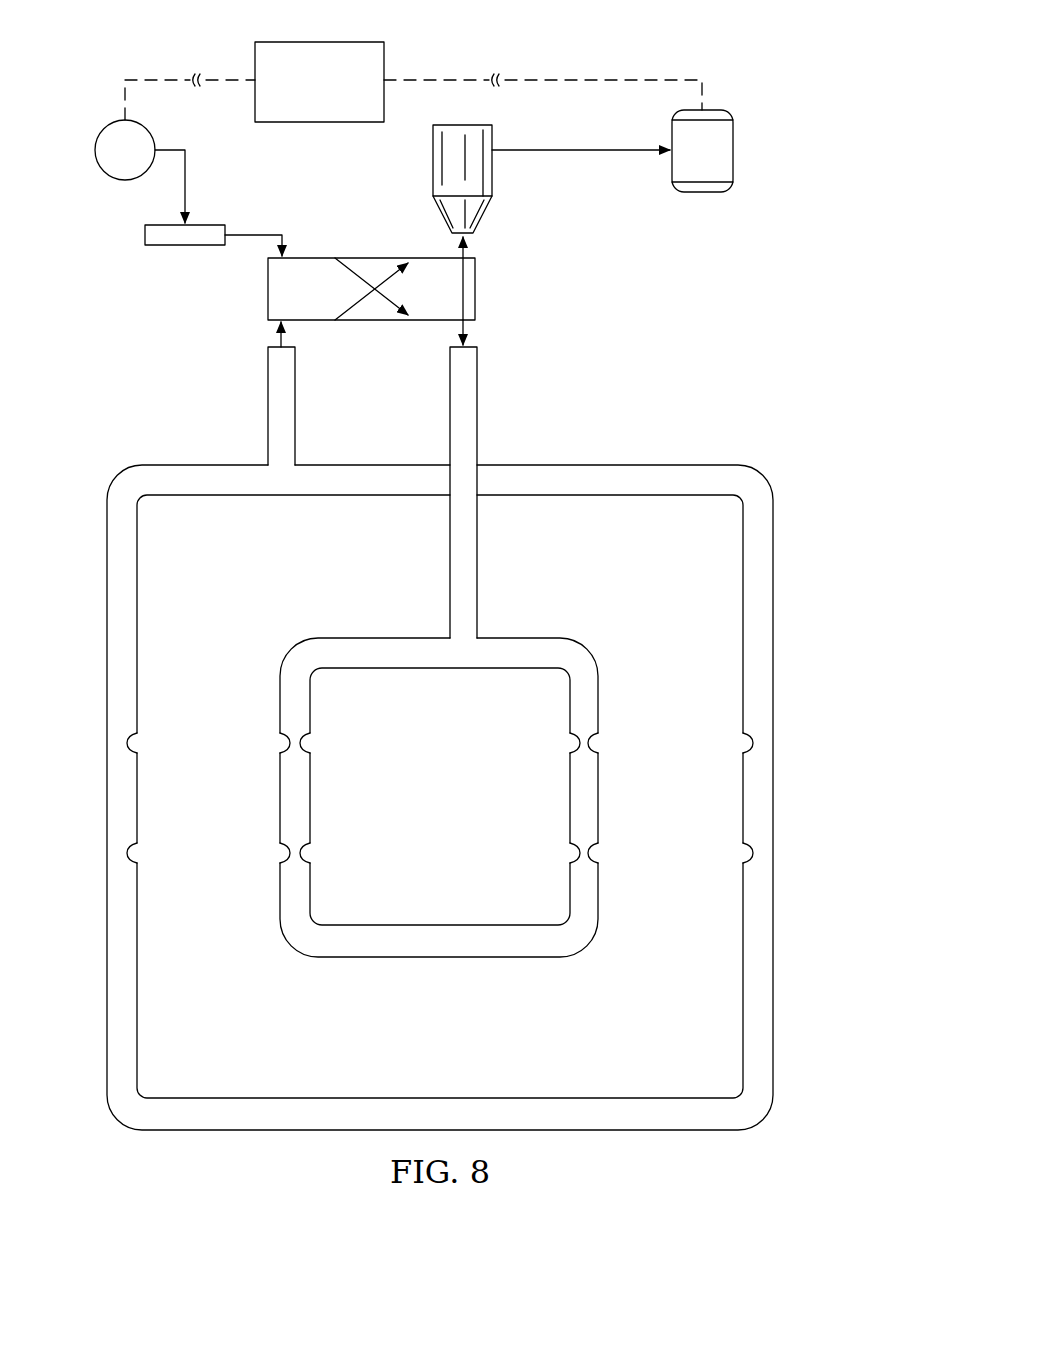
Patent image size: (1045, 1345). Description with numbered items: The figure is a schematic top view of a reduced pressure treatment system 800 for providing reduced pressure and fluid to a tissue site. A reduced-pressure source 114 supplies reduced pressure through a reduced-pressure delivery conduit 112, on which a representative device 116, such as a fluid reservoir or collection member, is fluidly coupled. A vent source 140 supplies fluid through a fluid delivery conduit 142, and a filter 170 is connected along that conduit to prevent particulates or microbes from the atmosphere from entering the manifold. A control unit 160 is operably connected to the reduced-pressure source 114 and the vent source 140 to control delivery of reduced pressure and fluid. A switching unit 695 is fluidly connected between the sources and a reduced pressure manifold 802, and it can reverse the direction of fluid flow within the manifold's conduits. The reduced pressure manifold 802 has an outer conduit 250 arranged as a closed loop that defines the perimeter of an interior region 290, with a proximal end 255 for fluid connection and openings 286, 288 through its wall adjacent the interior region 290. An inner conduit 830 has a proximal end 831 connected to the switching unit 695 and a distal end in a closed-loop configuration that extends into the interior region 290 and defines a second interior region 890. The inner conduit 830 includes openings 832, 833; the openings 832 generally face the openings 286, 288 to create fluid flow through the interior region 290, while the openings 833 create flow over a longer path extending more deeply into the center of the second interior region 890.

The reduced pressure treatment system 800 is at (759, 58).
The control unit 160 is at (303, 95).
The vent source 140 is at (108, 128).
The fluid delivery conduit 142 is at (182, 193).
The filter 170 is at (185, 246).
The switching unit 695 is at (312, 258).
The representative device 116 is at (432, 160).
The reduced-pressure delivery conduit 112 is at (575, 150).
The reduced-pressure source 114 is at (735, 139).
The proximal end 255 is at (266, 398).
The proximal end 831 is at (478, 400).
The outer conduit 250 is at (672, 463).
The reduced pressure manifold 802 is at (758, 437).
The inner conduit 830 is at (530, 636).
The opening 286 is at (137, 746).
The opening 288 is at (745, 746).
The opening 832 is at (278, 740).
The opening 833 is at (312, 740).
The second interior region 890 is at (424, 801).
The interior region 290 is at (424, 1040).